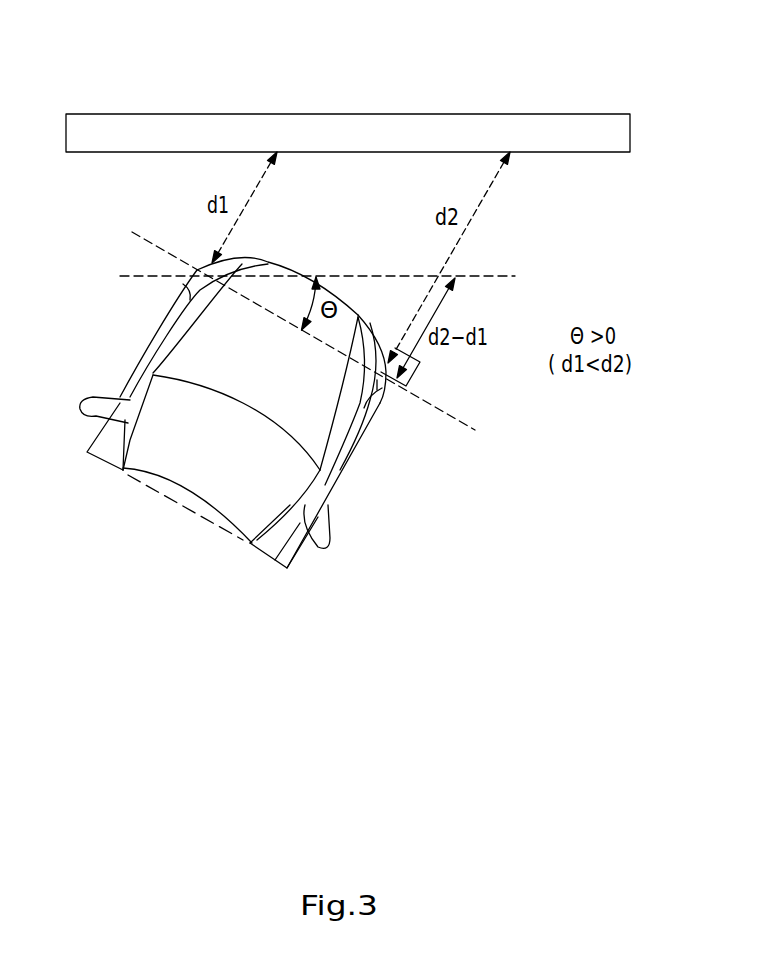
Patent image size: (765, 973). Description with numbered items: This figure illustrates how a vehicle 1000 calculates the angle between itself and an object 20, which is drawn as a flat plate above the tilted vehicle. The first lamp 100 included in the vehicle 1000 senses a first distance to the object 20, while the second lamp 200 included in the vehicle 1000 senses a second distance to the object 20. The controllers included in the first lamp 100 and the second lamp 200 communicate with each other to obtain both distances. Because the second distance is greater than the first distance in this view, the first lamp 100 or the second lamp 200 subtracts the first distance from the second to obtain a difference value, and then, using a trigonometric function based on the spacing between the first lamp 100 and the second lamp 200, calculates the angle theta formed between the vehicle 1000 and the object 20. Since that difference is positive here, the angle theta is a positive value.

The object 20 is at (348, 113).
The first lamp 100 is at (197, 285).
The second lamp 200 is at (382, 408).
The vehicle 1000 is at (253, 427).